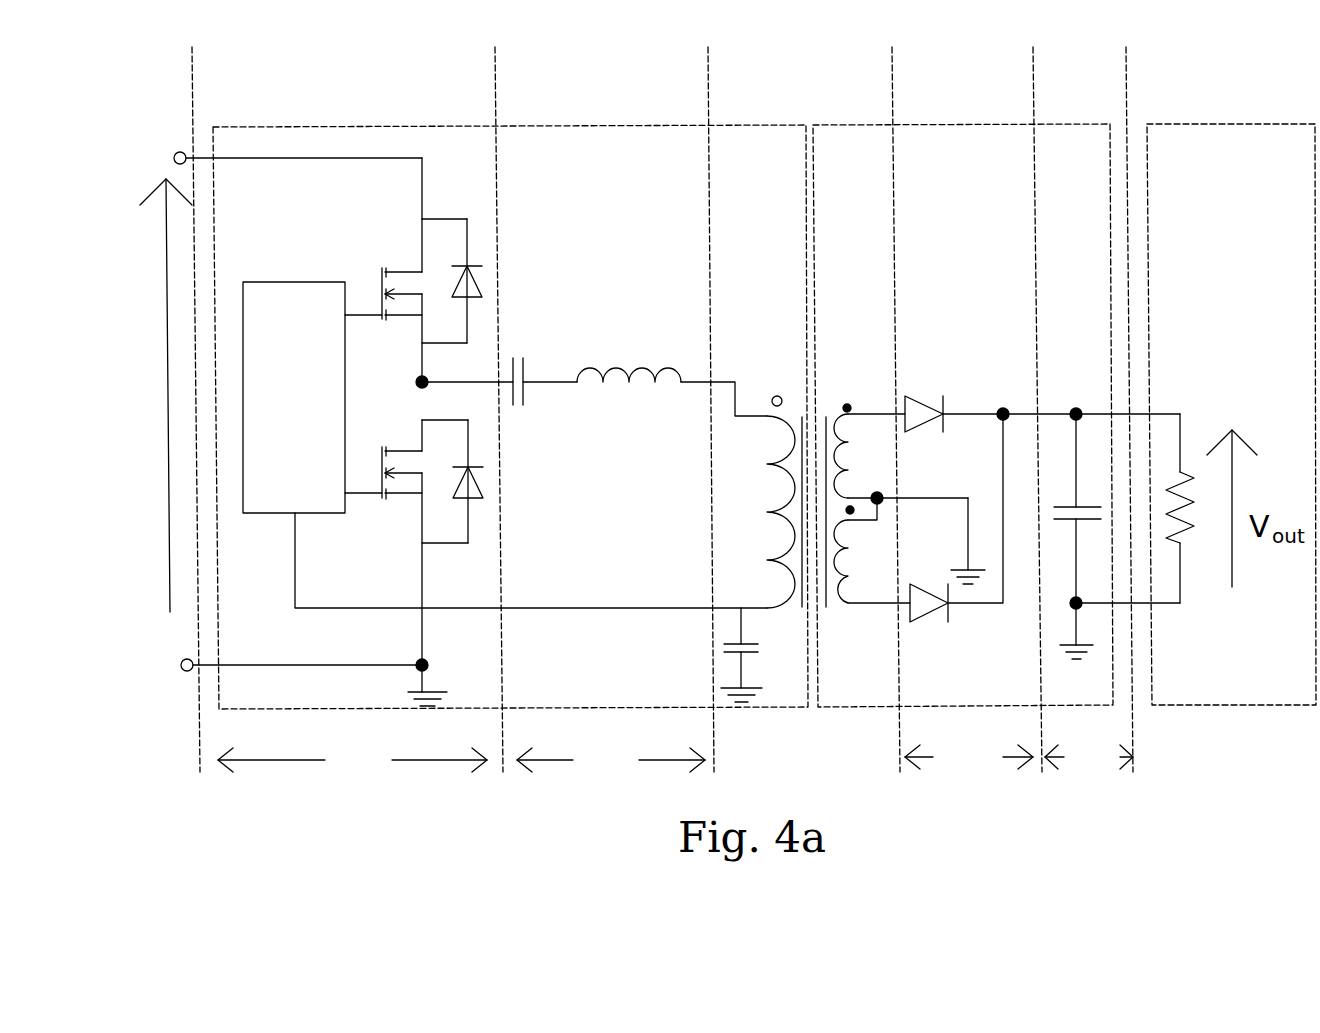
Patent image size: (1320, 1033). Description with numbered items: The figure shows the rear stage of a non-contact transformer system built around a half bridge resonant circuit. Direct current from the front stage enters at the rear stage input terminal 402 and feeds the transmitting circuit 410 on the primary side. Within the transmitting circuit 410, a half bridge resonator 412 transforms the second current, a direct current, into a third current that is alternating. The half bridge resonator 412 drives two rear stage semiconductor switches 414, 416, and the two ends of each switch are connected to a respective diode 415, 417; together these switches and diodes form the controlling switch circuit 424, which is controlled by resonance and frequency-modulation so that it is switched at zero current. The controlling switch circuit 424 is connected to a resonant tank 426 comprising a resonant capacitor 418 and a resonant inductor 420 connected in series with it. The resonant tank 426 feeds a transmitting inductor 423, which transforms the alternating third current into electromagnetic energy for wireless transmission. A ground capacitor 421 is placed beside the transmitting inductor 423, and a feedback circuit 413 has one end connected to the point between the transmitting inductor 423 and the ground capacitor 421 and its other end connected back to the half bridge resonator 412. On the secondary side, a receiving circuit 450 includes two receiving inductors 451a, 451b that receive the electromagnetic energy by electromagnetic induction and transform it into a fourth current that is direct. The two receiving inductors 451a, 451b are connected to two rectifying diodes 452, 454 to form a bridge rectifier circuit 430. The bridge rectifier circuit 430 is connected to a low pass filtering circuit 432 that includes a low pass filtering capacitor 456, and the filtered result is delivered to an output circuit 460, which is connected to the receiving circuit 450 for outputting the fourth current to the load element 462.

The rear stage input terminal 402 is at (166, 383).
The transmitting circuit 410 is at (512, 127).
The half bridge resonator 412 is at (270, 282).
The feedback circuit 413 is at (617, 608).
The rear stage semiconductor switch 414 is at (387, 266).
The diode 415 is at (483, 291).
The rear stage semiconductor switch 416 is at (397, 449).
The diode 417 is at (485, 483).
The resonant capacitor 418 is at (522, 358).
The resonant inductor 420 is at (597, 365).
The ground capacitor 421 is at (724, 648).
The transmitting inductor 423 is at (765, 462).
The controlling switch circuit 424 is at (352, 761).
The resonant tank 426 is at (611, 761).
The bridge rectifier circuit 430 is at (969, 758).
The low pass filtering circuit 432 is at (1089, 758).
The receiving circuit 450 is at (922, 124).
The receiving inductor 451a is at (836, 414).
The receiving inductor 451b is at (853, 605).
The rectifying diode 452 is at (905, 396).
The rectifying diode 454 is at (917, 621).
The low pass filtering capacitor 456 is at (1080, 507).
The output circuit 460 is at (1203, 124).
The load resistor 462 is at (1182, 472).